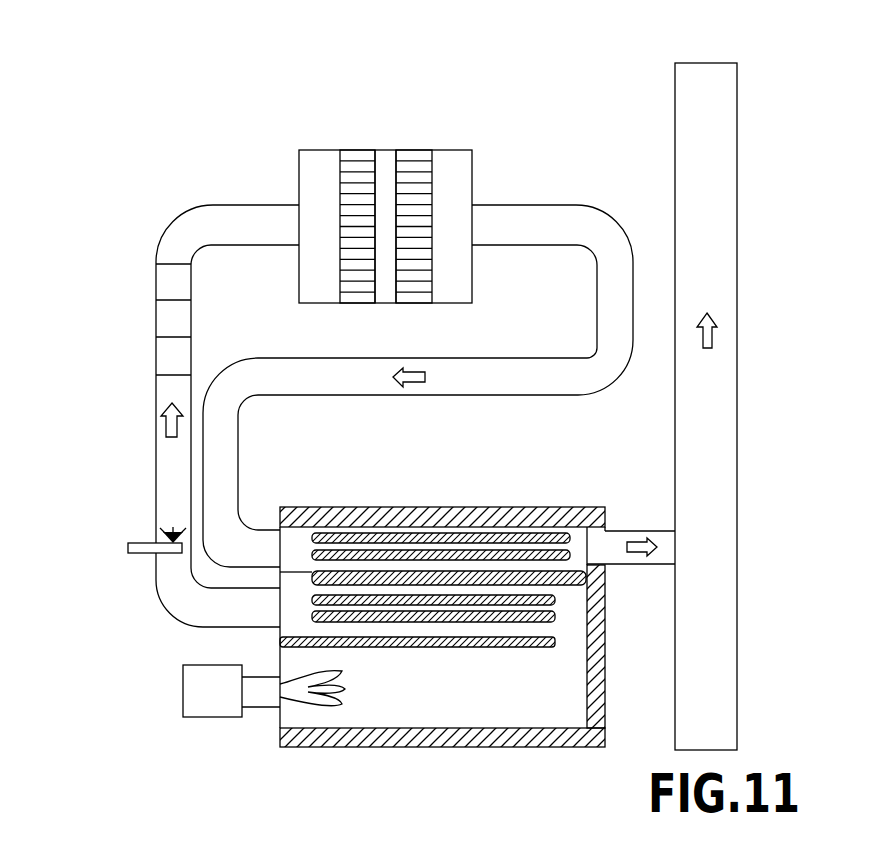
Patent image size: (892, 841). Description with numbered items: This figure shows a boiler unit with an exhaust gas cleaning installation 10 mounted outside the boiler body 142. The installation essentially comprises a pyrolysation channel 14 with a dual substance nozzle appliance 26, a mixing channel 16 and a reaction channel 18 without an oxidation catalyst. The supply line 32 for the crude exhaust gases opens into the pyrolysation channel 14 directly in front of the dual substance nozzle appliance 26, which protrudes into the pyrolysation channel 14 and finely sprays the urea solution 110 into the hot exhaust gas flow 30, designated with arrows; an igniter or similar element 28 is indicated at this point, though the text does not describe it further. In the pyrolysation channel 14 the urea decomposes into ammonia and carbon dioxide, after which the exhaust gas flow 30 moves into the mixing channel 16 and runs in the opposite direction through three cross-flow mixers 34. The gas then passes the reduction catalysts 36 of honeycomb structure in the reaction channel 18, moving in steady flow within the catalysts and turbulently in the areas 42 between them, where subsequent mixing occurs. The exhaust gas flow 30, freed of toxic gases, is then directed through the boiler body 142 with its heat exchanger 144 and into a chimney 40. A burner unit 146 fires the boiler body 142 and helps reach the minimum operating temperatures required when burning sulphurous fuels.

The exhaust gas cleaning installation 10 is at (136, 177).
The pyrolysation channel 14 is at (172, 473).
The mixing channel 16 is at (175, 315).
The reaction channel 18 is at (312, 162).
The dual substance nozzle appliance 26 is at (143, 553).
The igniter 28 is at (167, 536).
The exhaust gas flow 30 is at (166, 422).
The supply line 32 is at (183, 597).
The cross-flow mixers 34 is at (156, 352).
The reduction catalyst 36 is at (358, 158).
The chimney 40 is at (710, 447).
The areas between the catalysts 42 is at (387, 158).
The urea solution 110 is at (118, 547).
The boiler body 142 is at (468, 507).
The heat exchanger 144 is at (528, 537).
The burner unit 146 is at (203, 690).